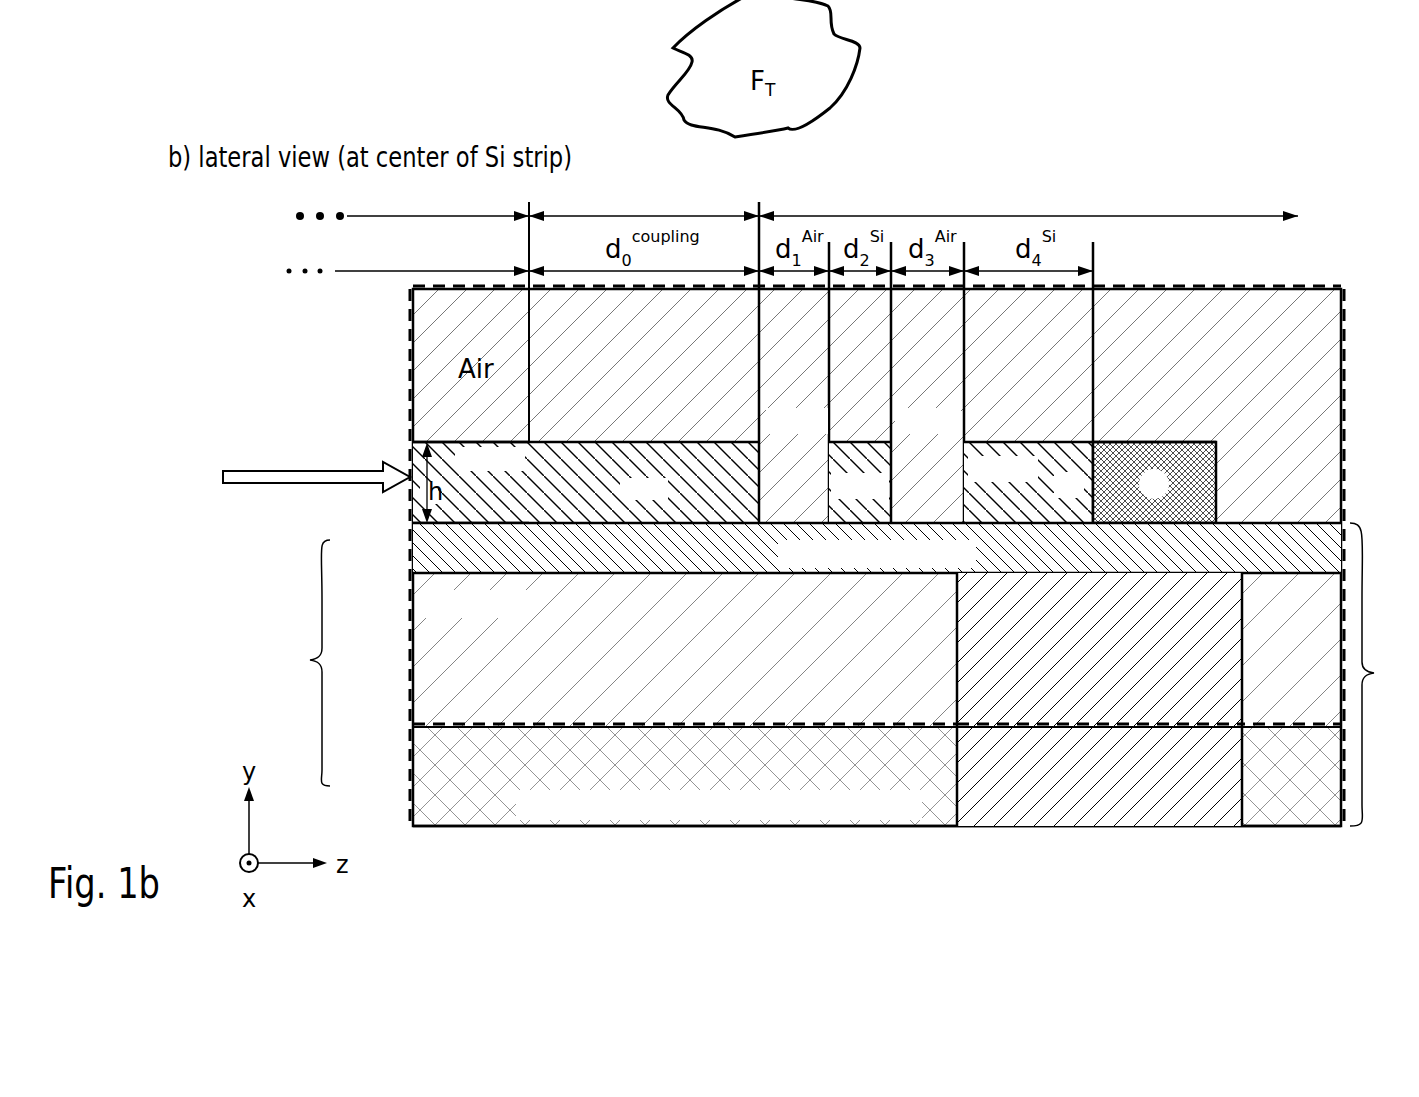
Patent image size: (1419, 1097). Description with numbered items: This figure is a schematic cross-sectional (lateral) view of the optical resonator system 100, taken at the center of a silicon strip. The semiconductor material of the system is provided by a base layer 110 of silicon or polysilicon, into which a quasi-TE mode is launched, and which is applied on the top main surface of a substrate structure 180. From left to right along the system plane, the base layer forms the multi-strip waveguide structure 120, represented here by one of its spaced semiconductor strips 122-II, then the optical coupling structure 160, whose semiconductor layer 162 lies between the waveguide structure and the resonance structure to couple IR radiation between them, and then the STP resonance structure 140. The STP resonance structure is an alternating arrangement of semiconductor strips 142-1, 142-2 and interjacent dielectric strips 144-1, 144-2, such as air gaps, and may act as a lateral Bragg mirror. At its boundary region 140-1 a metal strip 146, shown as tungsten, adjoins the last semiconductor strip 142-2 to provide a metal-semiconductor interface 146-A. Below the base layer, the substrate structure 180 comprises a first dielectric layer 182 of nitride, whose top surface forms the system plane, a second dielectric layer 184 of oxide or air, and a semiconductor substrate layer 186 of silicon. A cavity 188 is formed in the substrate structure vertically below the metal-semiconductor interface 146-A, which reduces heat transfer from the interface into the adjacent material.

The optical resonator system 100 is at (382, 72).
The base layer 110 is at (402, 437).
The multi-strip waveguide structure 120 is at (412, 312).
The semiconductor strip 122-II is at (471, 482).
The optical coupling structure 160 is at (644, 202).
The semiconductor layer 162 is at (586, 482).
The STP resonance structure 140 is at (1028, 202).
The boundary region 140-1 is at (1095, 200).
The semiconductor strip 142-1 is at (860, 382).
The semiconductor strip 142-2 is at (1028, 382).
The dielectric strip 144-1 is at (794, 362).
The dielectric strip 144-2 is at (929, 382).
The metal strip 146 is at (1197, 452).
The metal-semiconductor interface 146-A is at (1104, 452).
The substrate structure 180 is at (842, 674).
The first dielectric layer 182 is at (422, 548).
The second dielectric layer 184 is at (422, 656).
The semiconductor substrate layer 186 is at (422, 788).
The cavity 188 is at (1036, 815).